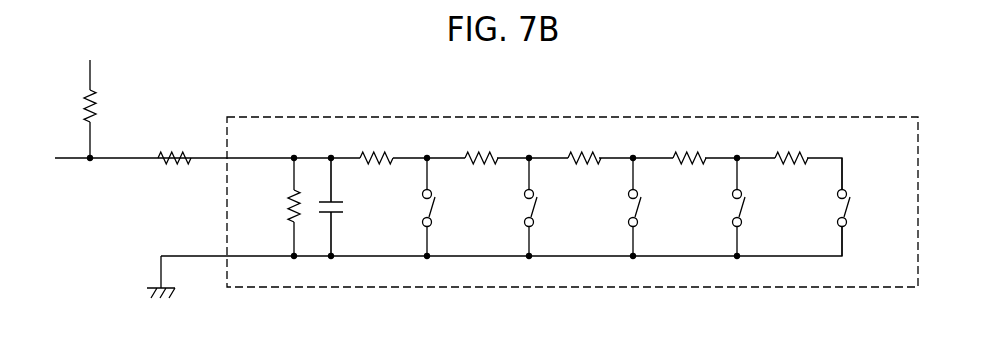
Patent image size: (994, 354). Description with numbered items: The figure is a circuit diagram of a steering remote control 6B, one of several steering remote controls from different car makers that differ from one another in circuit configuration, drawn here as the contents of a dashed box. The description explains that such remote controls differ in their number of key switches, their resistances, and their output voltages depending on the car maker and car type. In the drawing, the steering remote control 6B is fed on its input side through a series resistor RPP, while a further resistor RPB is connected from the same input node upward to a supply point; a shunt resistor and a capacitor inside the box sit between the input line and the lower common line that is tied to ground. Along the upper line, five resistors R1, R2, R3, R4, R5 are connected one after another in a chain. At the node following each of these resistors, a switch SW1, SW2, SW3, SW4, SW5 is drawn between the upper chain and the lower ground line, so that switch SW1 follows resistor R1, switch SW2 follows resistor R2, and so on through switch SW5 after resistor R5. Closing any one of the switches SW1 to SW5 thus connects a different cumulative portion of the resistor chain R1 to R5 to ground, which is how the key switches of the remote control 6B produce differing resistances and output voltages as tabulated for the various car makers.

The steering remote control 6B is at (636, 117).
The pull-up/bias resistor RPB is at (109, 110).
The series resistor RPP is at (174, 146).
The resistor R1 is at (376, 145).
The resistor R2 is at (481, 145).
The resistor R3 is at (584, 145).
The resistor R4 is at (689, 145).
The resistor R5 is at (791, 145).
The switch SW1 is at (452, 207).
The switch SW2 is at (554, 207).
The switch SW3 is at (658, 207).
The switch SW4 is at (762, 207).
The switch SW5 is at (867, 207).